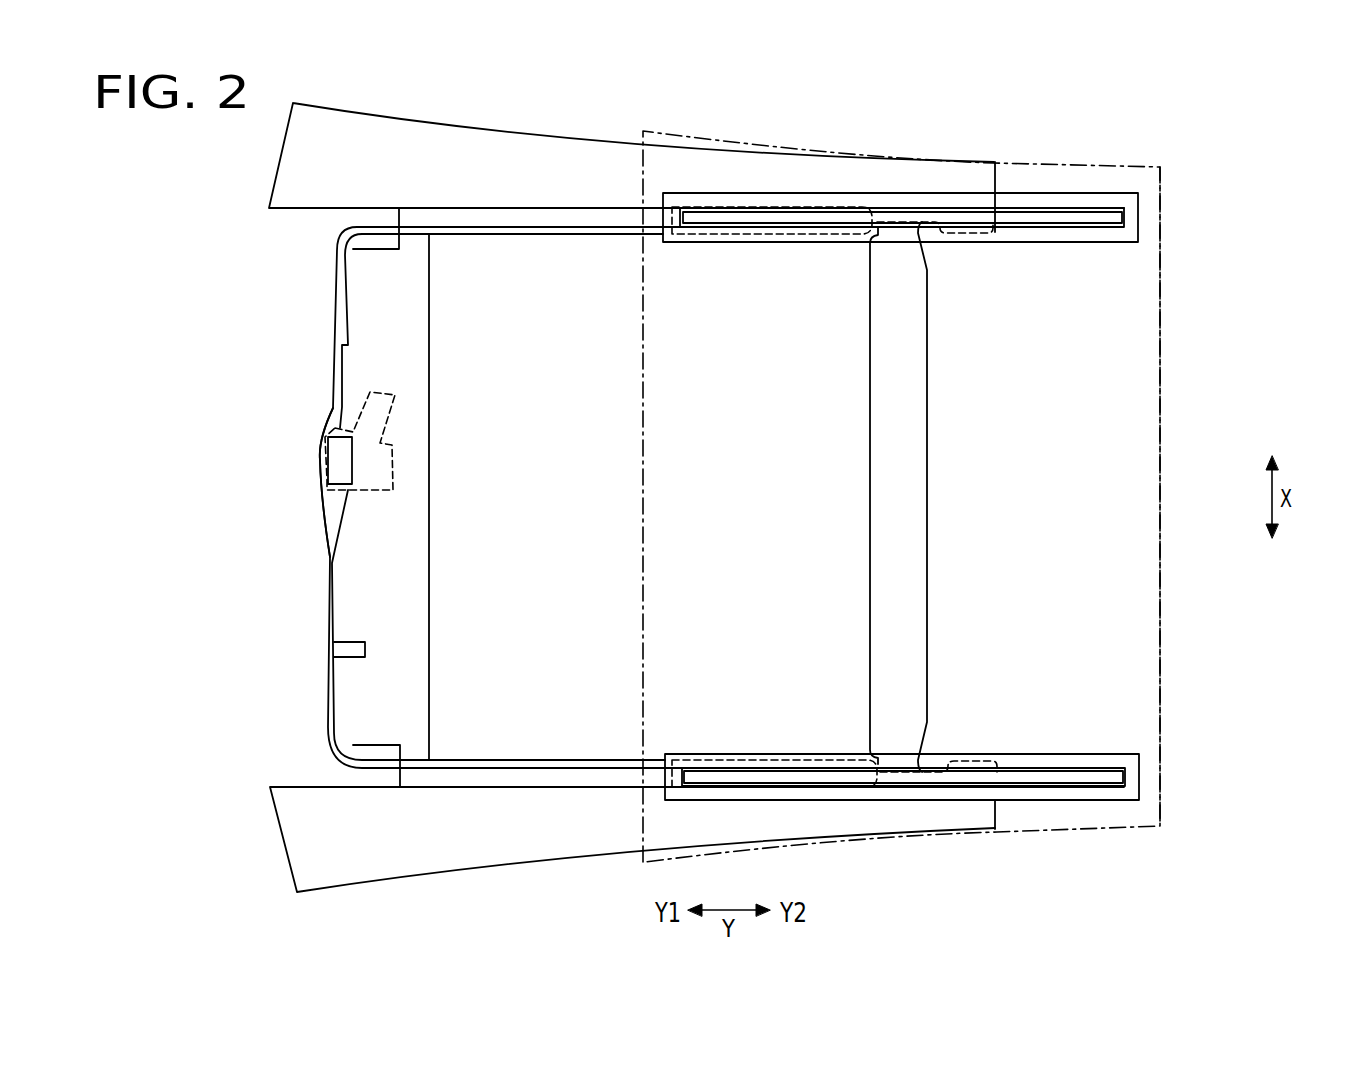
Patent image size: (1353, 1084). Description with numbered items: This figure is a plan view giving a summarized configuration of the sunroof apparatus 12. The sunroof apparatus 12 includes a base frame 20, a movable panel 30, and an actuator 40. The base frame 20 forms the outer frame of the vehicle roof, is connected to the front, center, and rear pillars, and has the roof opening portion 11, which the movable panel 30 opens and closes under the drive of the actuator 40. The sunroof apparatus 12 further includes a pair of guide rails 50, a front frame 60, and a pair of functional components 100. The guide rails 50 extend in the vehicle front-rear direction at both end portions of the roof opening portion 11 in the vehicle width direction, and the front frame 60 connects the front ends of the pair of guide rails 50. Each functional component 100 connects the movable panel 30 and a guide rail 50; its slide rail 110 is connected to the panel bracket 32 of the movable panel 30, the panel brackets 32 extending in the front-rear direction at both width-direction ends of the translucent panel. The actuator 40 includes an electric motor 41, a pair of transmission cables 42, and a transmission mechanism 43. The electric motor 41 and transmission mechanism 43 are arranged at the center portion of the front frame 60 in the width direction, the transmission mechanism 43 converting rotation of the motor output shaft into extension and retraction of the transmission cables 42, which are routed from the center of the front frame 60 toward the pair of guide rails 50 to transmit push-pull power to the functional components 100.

The roof opening portion 11 is at (600, 517).
The sunroof apparatus 12 is at (1083, 111).
The base frame 20 is at (507, 860).
The movable panel 30 is at (1160, 280).
The panel bracket 32 is at (1117, 242).
The actuator 40 is at (301, 440).
The electric motor 41 is at (402, 413).
The transmission cable 42 is at (336, 310).
The transmission mechanism 43 is at (352, 470).
The guide rail 50 is at (508, 237).
The front frame 60 is at (430, 570).
The functional component 100 is at (1040, 218).
The slide rail 110 is at (867, 497).